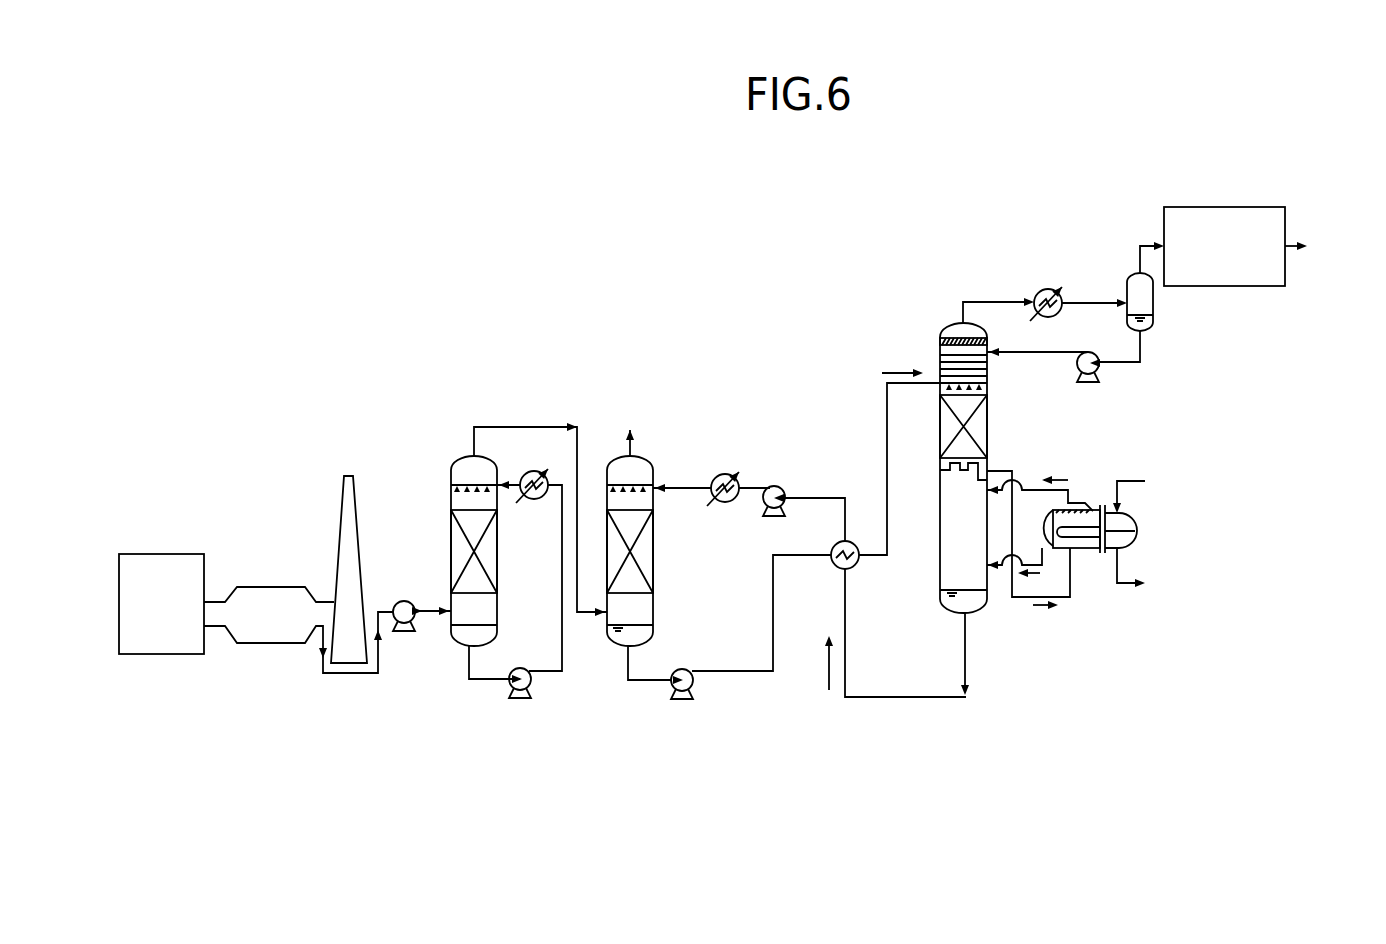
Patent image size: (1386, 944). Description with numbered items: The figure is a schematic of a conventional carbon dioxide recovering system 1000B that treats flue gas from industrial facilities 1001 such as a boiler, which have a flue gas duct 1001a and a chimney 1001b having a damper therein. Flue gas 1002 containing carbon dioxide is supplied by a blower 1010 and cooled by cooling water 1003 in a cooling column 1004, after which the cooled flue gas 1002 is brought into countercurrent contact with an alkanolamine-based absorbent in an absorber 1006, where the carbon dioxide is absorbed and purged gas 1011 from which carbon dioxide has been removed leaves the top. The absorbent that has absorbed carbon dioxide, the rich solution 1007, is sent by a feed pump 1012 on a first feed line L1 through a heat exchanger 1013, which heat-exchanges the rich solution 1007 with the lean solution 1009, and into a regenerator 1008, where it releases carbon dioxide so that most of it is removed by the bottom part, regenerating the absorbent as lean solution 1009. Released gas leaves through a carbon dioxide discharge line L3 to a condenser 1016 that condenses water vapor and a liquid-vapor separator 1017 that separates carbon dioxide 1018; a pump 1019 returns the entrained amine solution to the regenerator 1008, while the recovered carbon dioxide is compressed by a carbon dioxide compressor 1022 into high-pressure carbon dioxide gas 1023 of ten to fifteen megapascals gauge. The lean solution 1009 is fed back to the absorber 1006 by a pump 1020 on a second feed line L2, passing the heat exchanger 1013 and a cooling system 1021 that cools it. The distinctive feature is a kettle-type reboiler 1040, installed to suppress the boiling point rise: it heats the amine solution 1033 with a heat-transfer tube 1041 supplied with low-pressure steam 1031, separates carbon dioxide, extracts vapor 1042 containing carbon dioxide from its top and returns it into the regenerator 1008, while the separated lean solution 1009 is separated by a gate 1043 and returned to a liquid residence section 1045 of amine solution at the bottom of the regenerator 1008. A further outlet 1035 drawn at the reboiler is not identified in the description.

The carbon dioxide recovering system 1000B is at (608, 260).
The industrial facilities 1001 is at (182, 553).
The flue gas duct 1001a is at (267, 645).
The chimney 1001b is at (340, 513).
The flue gas 1002 is at (383, 607).
The cooling water 1003 is at (535, 557).
The cooling column 1004 is at (450, 465).
The absorber 1006 is at (643, 448).
The rich solution 1007 is at (895, 372).
The regenerator 1008 is at (955, 322).
The lean solution 1009 is at (996, 571).
The blower 1010 is at (403, 627).
The purged gas 1011 is at (628, 455).
The feed pump 1012 is at (682, 697).
The heat exchanger 1013 is at (840, 570).
The condenser 1016 is at (1042, 290).
The liquid-vapor separator 1017 is at (1153, 305).
The carbon dioxide 1018 is at (1152, 243).
The pump 1019 is at (1100, 370).
The pump 1020 is at (777, 486).
The cooling system 1021 is at (712, 530).
The carbon dioxide compressor 1022 is at (1205, 207).
The high-pressure carbon dioxide gas 1023 is at (1325, 250).
The low-pressure steam 1031 is at (1155, 492).
The amine solution 1033 is at (1048, 612).
The condensate discharge line 1035 is at (1158, 571).
The kettle-type reboiler 1040 is at (1094, 560).
The heat-transfer tube 1041 is at (1076, 527).
The vapor containing carbon dioxide 1042 is at (1058, 478).
The gate 1043 is at (1070, 545).
The liquid residence section 1045 is at (952, 603).
The first feed line L1 is at (740, 670).
The second feed line L2 is at (932, 700).
The carbon dioxide discharge line L3 is at (987, 302).